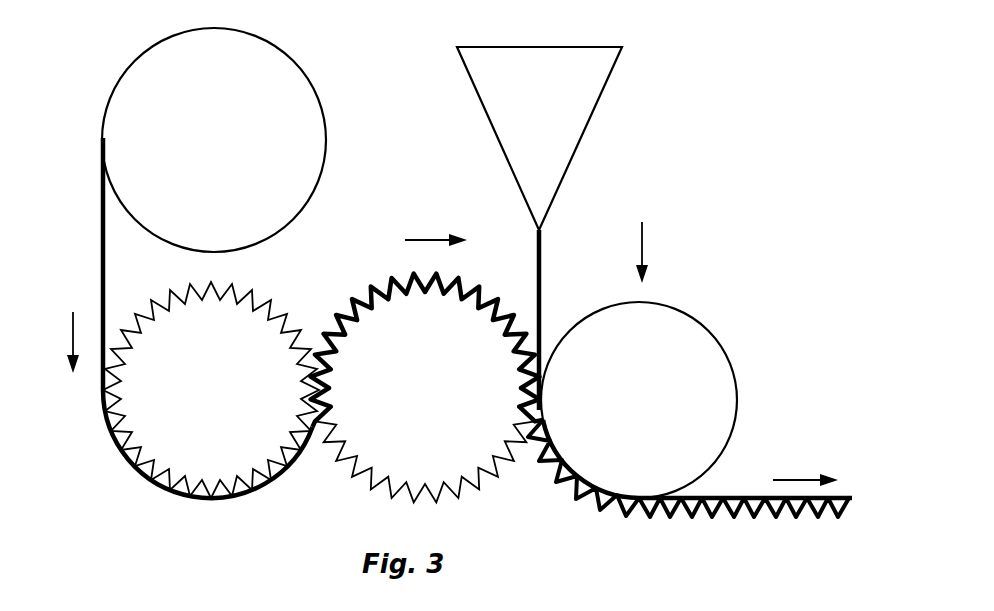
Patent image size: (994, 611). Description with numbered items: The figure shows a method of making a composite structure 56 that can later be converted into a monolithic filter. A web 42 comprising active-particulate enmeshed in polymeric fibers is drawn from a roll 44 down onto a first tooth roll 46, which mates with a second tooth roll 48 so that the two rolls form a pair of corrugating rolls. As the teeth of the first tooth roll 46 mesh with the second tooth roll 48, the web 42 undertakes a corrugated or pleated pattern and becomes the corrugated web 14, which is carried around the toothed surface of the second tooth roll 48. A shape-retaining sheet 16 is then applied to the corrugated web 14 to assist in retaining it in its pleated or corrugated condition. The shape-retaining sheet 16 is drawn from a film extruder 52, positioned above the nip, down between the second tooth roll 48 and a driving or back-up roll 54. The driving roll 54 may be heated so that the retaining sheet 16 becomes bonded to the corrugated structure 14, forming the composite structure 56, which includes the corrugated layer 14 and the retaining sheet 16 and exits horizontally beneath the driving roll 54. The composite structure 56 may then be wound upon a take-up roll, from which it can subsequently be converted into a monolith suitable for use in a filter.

The corrugated web 14 is at (481, 291).
The shape-retaining sheet 16 is at (541, 262).
The web 42 is at (102, 270).
The roll 44 is at (224, 144).
The first tooth roll 46 is at (228, 402).
The second tooth roll 48 is at (441, 402).
The film extruder 52 is at (554, 112).
The driving roll 54 is at (657, 409).
The composite structure 56 is at (744, 488).